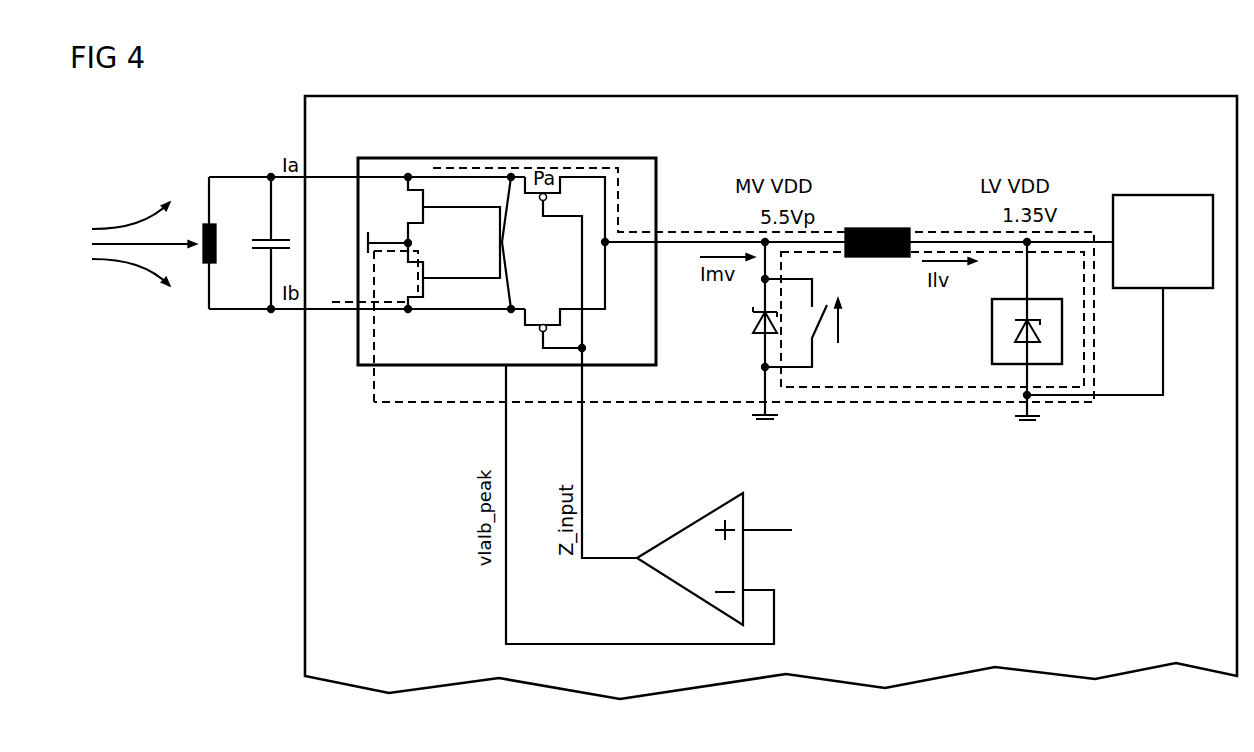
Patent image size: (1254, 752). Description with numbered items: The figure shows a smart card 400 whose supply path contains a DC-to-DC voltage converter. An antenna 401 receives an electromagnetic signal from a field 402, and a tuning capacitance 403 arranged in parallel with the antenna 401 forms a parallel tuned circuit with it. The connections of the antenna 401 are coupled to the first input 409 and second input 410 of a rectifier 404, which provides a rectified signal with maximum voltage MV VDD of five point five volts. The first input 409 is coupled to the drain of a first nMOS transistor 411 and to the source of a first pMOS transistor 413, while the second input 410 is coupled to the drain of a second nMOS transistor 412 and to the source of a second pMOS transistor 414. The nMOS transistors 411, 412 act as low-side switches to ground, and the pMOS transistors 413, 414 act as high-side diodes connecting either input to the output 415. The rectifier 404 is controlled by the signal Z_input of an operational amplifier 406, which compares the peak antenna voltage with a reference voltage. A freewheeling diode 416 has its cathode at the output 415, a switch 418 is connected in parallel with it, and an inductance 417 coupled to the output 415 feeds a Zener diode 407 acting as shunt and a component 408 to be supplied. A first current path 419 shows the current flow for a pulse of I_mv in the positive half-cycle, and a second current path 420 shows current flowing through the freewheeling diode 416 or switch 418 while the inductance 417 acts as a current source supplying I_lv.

The smart card 400 is at (813, 96).
The antenna 401 is at (205, 223).
The field 402 is at (108, 220).
The tuning capacitance 403 is at (257, 238).
The rectifier 404 is at (537, 158).
The operational amplifier 406 is at (690, 525).
The Zener diode 407 is at (1063, 332).
The component to be supplied 408 is at (1164, 195).
The first input 409 is at (355, 172).
The second input 410 is at (355, 313).
The first nMOS transistor 411 is at (425, 217).
The second nMOS transistor 412 is at (428, 271).
The first pMOS transistor 413 is at (538, 198).
The second pMOS transistor 414 is at (533, 330).
The output 415 is at (656, 246).
The freewheeling diode 416 is at (753, 325).
The inductance 417 is at (879, 228).
The switch 418 is at (823, 326).
The first current path 419 is at (940, 405).
The second current path 420 is at (882, 388).